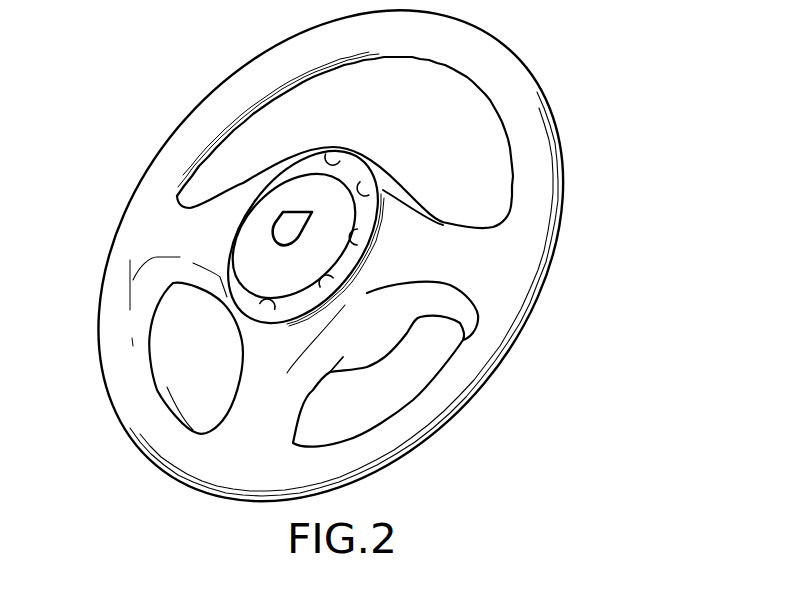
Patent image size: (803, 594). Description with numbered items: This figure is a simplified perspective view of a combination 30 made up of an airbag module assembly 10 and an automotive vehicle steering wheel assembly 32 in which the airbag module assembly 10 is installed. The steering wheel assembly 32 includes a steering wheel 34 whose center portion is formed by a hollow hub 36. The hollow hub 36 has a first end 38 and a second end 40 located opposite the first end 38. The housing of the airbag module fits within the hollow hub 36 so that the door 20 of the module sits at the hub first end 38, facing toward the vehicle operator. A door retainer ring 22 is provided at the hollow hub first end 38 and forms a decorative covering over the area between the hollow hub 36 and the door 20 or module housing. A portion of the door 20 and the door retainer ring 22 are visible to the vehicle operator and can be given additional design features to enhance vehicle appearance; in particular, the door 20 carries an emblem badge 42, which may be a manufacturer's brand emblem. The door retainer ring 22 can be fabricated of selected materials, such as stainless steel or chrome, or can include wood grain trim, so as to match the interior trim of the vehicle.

The airbag module assembly 10 is at (335, 146).
The door 20 is at (283, 178).
The door retainer ring 22 is at (219, 318).
The combination 30 is at (577, 67).
The steering wheel assembly 32 is at (568, 247).
The steering wheel 34 is at (180, 140).
The hollow hub 36 is at (403, 183).
The first end 38 is at (377, 247).
The second end 40 is at (383, 357).
The emblem badge 42 is at (283, 237).